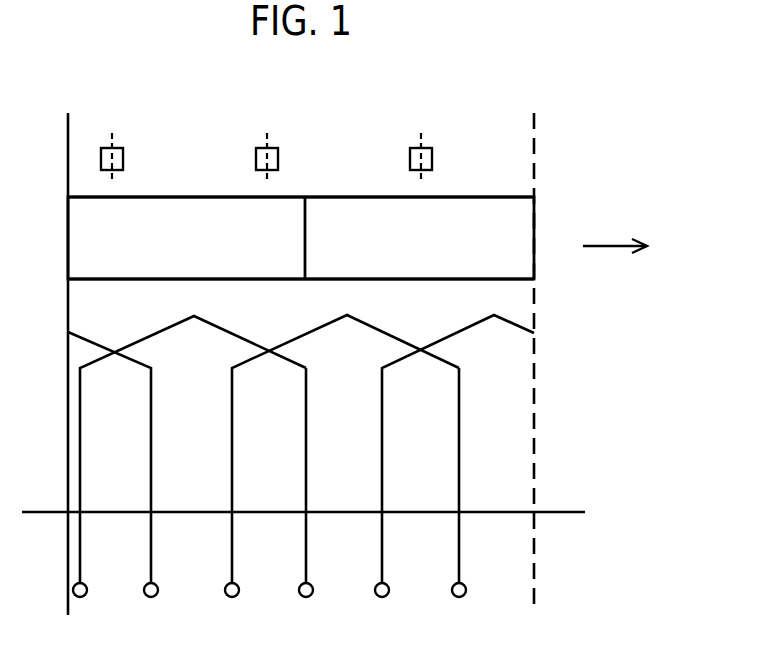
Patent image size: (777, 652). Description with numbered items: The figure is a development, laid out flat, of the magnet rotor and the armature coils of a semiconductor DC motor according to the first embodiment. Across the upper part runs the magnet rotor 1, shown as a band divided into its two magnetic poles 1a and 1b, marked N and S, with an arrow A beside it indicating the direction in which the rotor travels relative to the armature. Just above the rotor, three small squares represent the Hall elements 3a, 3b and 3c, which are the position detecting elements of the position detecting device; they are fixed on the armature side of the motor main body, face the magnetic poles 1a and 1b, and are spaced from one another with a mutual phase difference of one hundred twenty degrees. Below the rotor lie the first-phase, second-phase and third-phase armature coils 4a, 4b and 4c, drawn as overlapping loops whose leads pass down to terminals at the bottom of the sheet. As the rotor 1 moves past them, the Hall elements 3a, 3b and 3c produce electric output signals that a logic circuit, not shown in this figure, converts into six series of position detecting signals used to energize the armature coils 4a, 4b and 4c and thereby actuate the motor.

The magnet rotor 1 is at (337, 251).
The magnetic pole 1a is at (228, 198).
The magnetic pole 1b is at (395, 198).
The Hall element 3a is at (123, 153).
The Hall element 3b is at (278, 153).
The Hall element 3c is at (432, 153).
The first-phase armature coil 4a is at (151, 423).
The second-phase armature coil 4b is at (306, 423).
The third-phase armature coil 4c is at (459, 423).
The direction of movement A is at (610, 246).